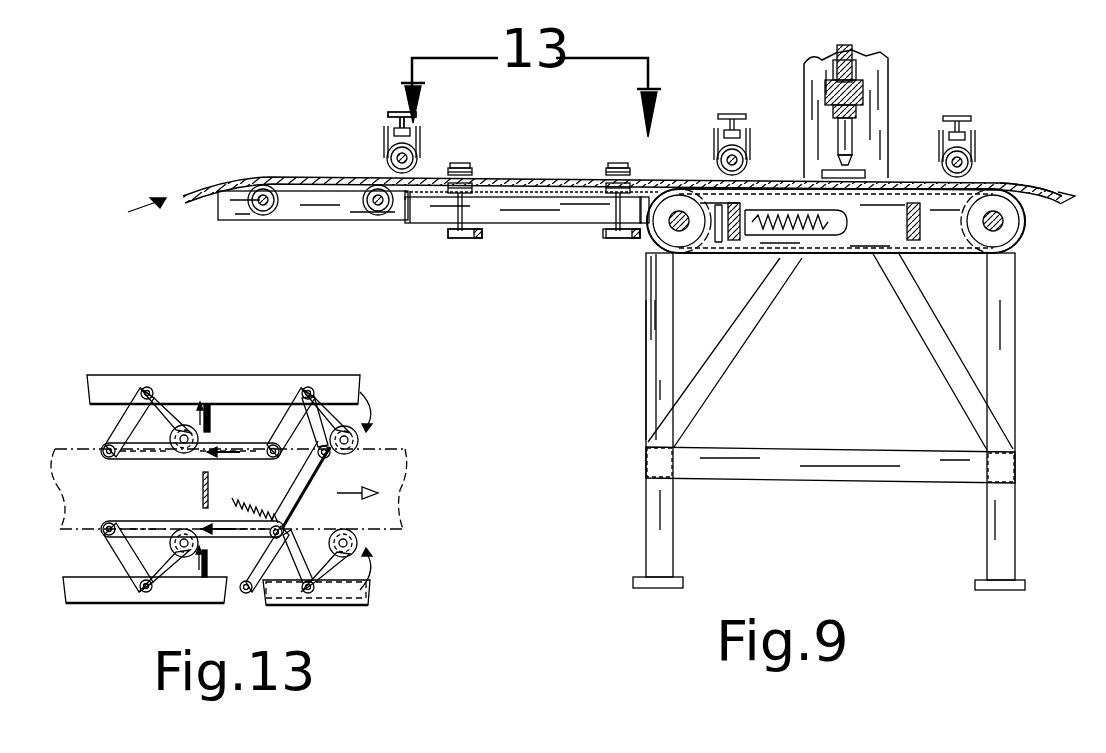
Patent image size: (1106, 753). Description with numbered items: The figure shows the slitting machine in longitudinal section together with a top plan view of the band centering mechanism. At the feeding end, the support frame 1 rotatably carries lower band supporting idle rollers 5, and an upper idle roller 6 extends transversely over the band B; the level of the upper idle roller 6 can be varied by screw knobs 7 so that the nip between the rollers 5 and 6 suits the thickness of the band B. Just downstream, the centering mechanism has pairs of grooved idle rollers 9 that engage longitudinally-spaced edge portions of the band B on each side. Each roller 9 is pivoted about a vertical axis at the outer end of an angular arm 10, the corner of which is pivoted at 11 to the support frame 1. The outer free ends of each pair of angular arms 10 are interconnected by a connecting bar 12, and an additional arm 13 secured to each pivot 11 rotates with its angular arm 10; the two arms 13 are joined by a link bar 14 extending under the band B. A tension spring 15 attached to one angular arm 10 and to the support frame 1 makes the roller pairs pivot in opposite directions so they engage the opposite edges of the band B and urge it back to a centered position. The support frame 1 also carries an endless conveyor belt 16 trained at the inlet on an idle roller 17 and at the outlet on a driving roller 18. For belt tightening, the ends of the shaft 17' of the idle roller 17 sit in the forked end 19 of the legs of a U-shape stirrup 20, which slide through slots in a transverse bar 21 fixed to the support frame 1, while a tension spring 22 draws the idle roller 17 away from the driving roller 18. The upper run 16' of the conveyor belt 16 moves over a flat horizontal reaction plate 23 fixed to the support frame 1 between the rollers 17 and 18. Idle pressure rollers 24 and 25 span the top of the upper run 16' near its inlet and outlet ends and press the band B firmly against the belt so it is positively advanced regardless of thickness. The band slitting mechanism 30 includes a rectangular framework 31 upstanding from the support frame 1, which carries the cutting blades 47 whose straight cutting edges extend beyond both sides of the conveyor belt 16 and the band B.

In FIG. 9, the support frame 1 is at (302, 213).
In FIG. 13, the support frame 1 is at (105, 375).
In FIG. 9, the lower band supporting idle rollers 5 is at (257, 216).
In FIG. 9, the upper idle roller 6 is at (387, 147).
In FIG. 9, the screw knobs 7 is at (400, 112).
In FIG. 9, the grooved idle rollers 9 is at (468, 165).
In FIG. 13, the grooved idle rollers 9 is at (358, 542).
In FIG. 9, the angular arm 10 is at (483, 238).
In FIG. 13, the angular arm 10 is at (128, 420).
In FIG. 13, the pivot 11 is at (300, 600).
In FIG. 13, the connecting bar 12 is at (164, 452).
In FIG. 13, the additional arm 13 is at (318, 458).
In FIG. 13, the link bar 14 is at (310, 498).
In FIG. 13, the tension spring 15 is at (236, 500).
In FIG. 9, the endless conveyor belt 16 is at (836, 249).
In FIG. 9, the upper run of the conveyor belt 16' is at (1026, 168).
In FIG. 9, the idle roller 17 is at (679, 249).
In FIG. 9, the shaft of idle roller 17' is at (633, 298).
In FIG. 9, the driving roller 18 is at (1028, 238).
In FIG. 9, the forked end 19 is at (665, 240).
In FIG. 9, the U-shape stirrup 20 is at (820, 240).
In FIG. 9, the transverse bar 21 is at (742, 242).
In FIG. 9, the tension spring 22 is at (788, 258).
In FIG. 9, the reaction plate 23 is at (930, 203).
In FIG. 9, the idle pressure roller 24 is at (748, 158).
In FIG. 9, the idle pressure roller 25 is at (973, 162).
In FIG. 9, the band slitting mechanism 30 is at (897, 70).
In FIG. 9, the rectangular framework 31 is at (878, 60).
In FIG. 9, the cutting blades 47 is at (850, 130).
In FIG. 9, the band B is at (532, 178).